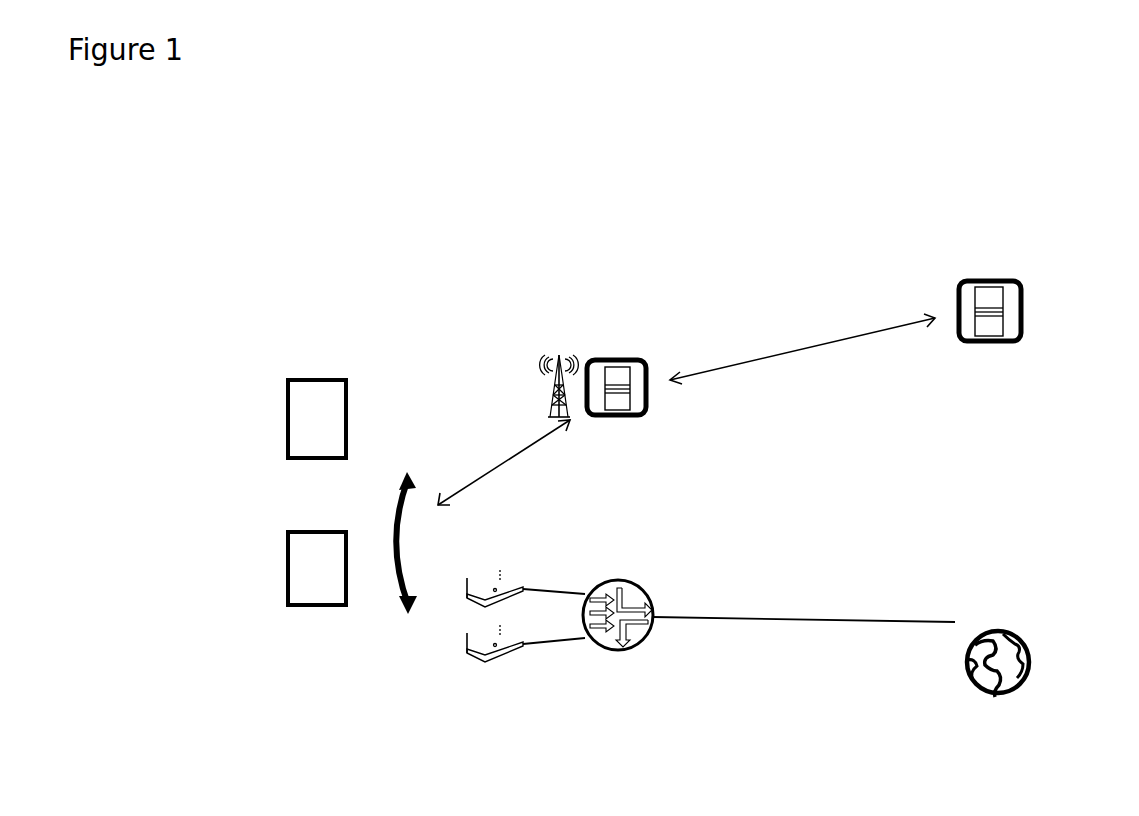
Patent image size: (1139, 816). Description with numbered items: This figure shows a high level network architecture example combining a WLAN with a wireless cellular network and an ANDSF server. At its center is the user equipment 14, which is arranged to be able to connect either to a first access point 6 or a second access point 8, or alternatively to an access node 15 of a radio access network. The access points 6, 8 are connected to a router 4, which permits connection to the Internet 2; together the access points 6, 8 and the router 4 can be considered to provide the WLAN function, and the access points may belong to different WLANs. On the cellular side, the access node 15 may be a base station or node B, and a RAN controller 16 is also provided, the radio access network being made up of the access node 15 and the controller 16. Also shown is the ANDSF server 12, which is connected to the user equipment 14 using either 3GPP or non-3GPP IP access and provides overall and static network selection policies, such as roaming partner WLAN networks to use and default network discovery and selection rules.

The Internet 2 is at (1000, 613).
The router 4 is at (652, 592).
The first access point 6 is at (517, 667).
The second access point 8 is at (525, 567).
The ANDSF server 12 is at (1030, 332).
The user equipment 14 is at (370, 425).
The access node 15 is at (540, 358).
The RAN controller 16 is at (592, 360).